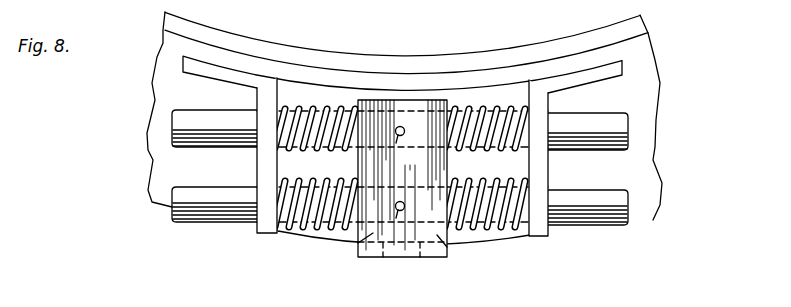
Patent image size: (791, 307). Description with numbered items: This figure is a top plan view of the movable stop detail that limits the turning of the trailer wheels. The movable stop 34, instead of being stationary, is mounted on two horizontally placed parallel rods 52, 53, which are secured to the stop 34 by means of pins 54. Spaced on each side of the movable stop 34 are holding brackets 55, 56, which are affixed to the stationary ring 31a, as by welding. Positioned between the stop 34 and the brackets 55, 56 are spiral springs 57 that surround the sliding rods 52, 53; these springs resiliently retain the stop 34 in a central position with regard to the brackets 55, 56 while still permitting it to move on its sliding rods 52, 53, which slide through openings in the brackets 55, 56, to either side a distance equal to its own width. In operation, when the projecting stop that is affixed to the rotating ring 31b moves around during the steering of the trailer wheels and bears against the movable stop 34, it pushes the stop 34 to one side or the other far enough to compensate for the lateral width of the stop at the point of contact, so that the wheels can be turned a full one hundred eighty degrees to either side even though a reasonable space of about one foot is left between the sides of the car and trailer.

The stationary ring 31a is at (640, 43).
The rotating ring 31b is at (427, 67).
The movable stop 34 is at (433, 236).
The sliding rod 52 is at (620, 123).
The sliding rod 53 is at (594, 222).
The pins 54 is at (398, 136).
The holding bracket 55 is at (258, 168).
The holding bracket 56 is at (537, 170).
The spiral springs 57 is at (293, 107).